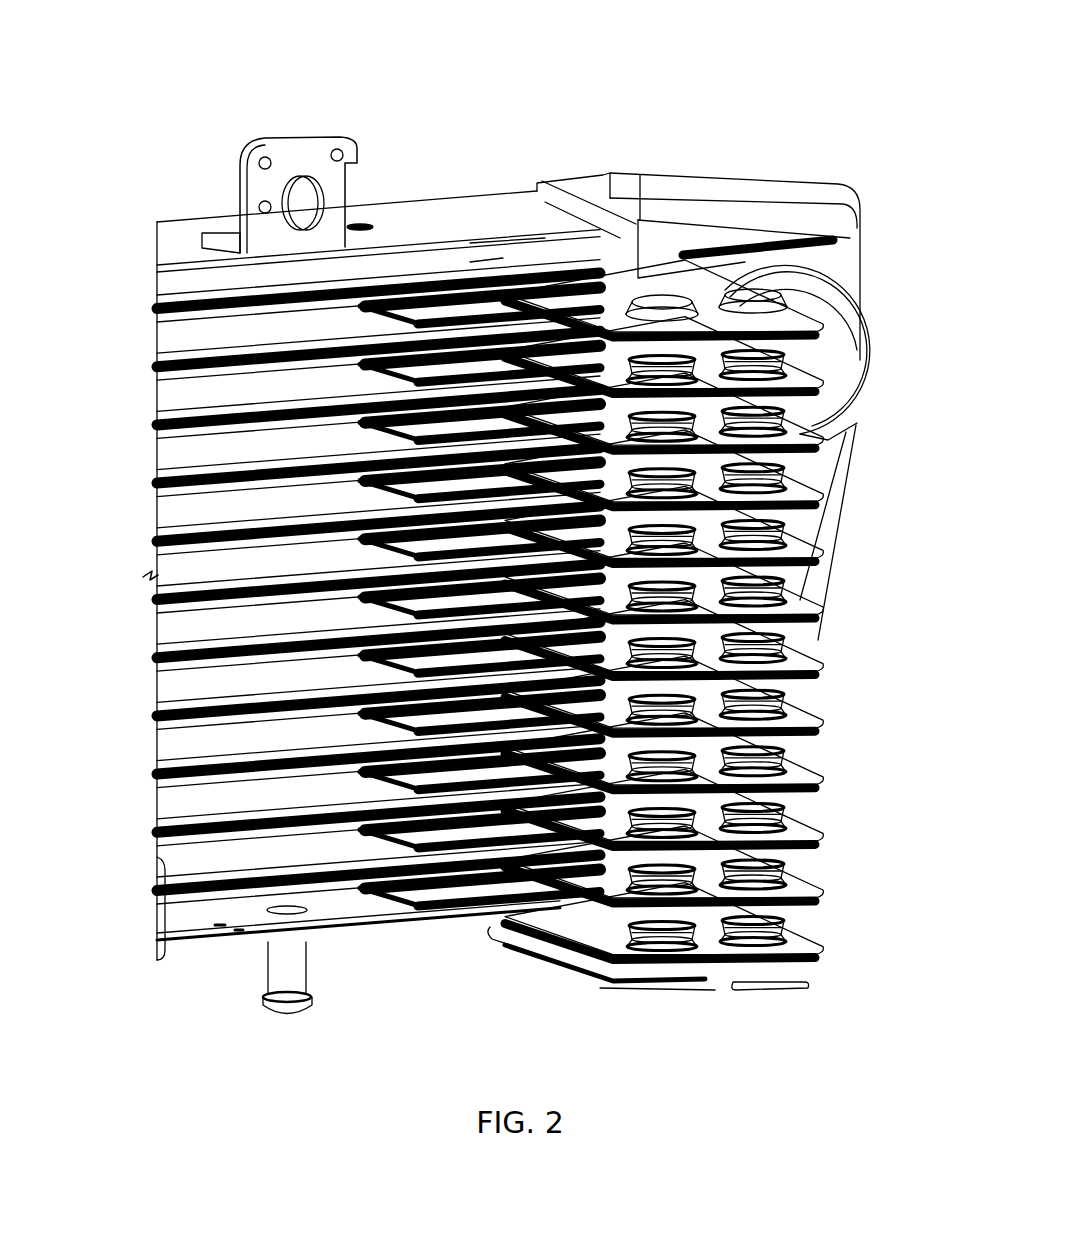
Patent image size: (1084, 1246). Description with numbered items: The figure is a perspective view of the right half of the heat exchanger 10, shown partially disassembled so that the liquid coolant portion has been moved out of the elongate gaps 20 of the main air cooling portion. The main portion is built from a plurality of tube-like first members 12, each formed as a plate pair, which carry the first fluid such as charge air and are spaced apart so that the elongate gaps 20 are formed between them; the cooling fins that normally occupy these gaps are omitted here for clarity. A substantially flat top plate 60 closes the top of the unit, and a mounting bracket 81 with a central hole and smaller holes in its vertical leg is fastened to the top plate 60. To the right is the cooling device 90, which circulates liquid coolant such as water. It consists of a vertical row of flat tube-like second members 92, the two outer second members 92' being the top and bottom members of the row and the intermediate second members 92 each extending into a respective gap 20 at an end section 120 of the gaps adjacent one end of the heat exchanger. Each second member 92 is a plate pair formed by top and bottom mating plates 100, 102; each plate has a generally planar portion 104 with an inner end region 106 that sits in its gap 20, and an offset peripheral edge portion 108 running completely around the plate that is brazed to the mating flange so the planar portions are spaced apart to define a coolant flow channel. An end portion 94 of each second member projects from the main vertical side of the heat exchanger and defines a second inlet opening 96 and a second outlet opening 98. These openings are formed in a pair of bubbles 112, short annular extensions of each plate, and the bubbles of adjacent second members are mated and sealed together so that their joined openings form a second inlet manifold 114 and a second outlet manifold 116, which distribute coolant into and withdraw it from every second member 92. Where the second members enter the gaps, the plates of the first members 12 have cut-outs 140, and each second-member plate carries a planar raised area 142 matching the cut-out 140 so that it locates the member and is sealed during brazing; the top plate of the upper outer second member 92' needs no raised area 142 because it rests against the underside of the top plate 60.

The heat exchanger 10 is at (427, 111).
The tube-like first member 12 is at (297, 835).
The elongate gap 20 is at (246, 280).
The top plate 60 is at (418, 213).
The mounting bracket 81 is at (276, 142).
The cooling device 90 is at (822, 642).
The tube-like second member 92 is at (702, 659).
The outer second member 92' is at (821, 647).
The end portion 94 is at (830, 465).
The second inlet opening 96 is at (740, 300).
The second outlet opening 98 is at (650, 304).
The top mating plate 100 is at (815, 772).
The bottom mating plate 102 is at (800, 805).
The planar portion 104 is at (632, 290).
The inner end region 106 is at (563, 292).
The offset peripheral edge portion 108 is at (823, 557).
The bubble 112 is at (805, 600).
The second inlet manifold 114 is at (828, 437).
The second outlet manifold 116 is at (585, 980).
The end section 120 is at (447, 853).
The cut-out 140 is at (300, 343).
The planar raised area 142 is at (530, 967).